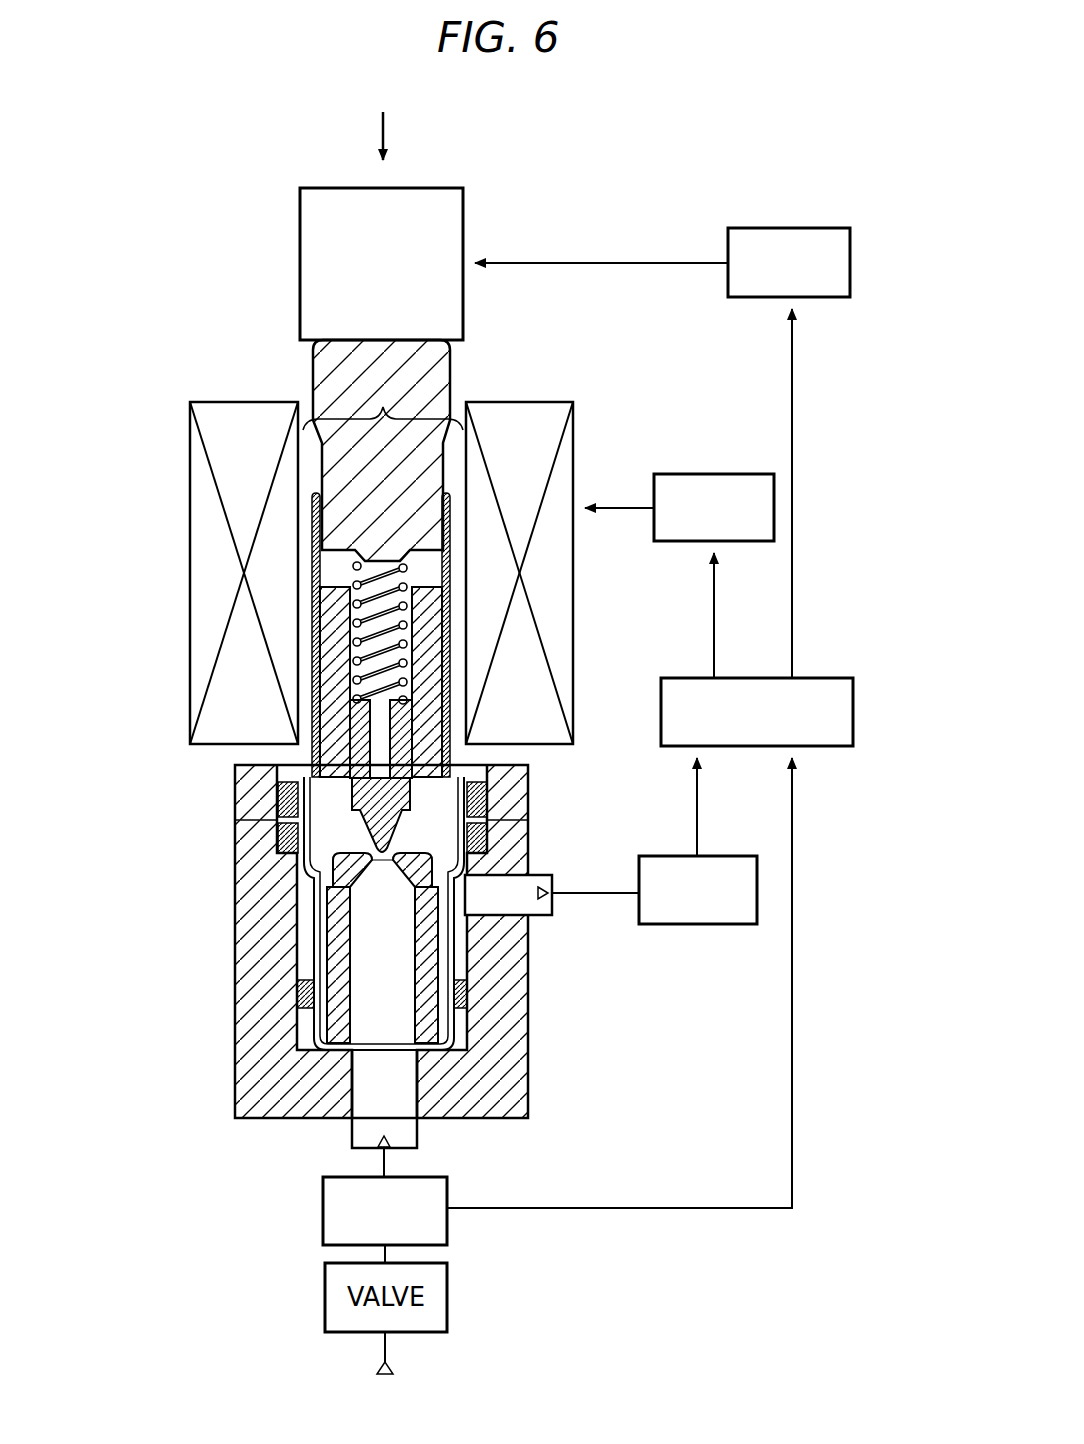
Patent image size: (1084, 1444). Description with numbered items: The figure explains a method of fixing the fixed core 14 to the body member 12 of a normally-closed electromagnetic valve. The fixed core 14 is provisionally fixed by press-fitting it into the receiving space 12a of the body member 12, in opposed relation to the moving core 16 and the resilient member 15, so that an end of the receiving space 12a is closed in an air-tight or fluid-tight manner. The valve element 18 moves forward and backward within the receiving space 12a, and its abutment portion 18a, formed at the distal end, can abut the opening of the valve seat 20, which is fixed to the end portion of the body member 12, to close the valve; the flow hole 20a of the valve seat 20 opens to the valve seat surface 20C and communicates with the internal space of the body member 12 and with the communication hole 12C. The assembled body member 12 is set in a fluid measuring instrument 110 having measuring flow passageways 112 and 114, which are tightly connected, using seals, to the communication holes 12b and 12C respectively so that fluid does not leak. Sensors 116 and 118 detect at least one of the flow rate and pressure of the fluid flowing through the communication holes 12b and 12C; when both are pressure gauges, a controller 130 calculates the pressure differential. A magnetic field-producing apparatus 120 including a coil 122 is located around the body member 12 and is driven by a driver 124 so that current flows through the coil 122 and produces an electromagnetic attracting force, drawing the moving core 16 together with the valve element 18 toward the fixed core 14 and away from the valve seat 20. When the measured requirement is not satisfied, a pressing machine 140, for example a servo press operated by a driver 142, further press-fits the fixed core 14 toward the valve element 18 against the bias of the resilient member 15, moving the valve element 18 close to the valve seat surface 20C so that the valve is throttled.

The body member 12 is at (340, 755).
The receiving space 12a is at (383, 402).
The communication hole 12b is at (453, 895).
The communication hole 12C is at (375, 1045).
The fixed core 14 is at (327, 362).
The resilient member 15 is at (317, 618).
The moving core 16 is at (327, 697).
The valve element 18 is at (300, 778).
The abutment portion 18a is at (382, 856).
The valve seat 20 is at (313, 952).
The flow hole 20a is at (380, 885).
The valve seat surface 20C is at (405, 832).
The fluid measuring instrument 110 is at (214, 990).
The measuring flow passageway 112 is at (497, 908).
The measuring flow passageway 114 is at (365, 1100).
The sensor 116 is at (697, 926).
The sensor 118 is at (323, 1228).
The magnetic field-producing apparatus 120 is at (168, 458).
The coil 122 is at (207, 522).
The driver 124 is at (715, 474).
The controller 130 is at (853, 712).
The pressing machine 140 is at (465, 200).
The driver 142 is at (790, 228).